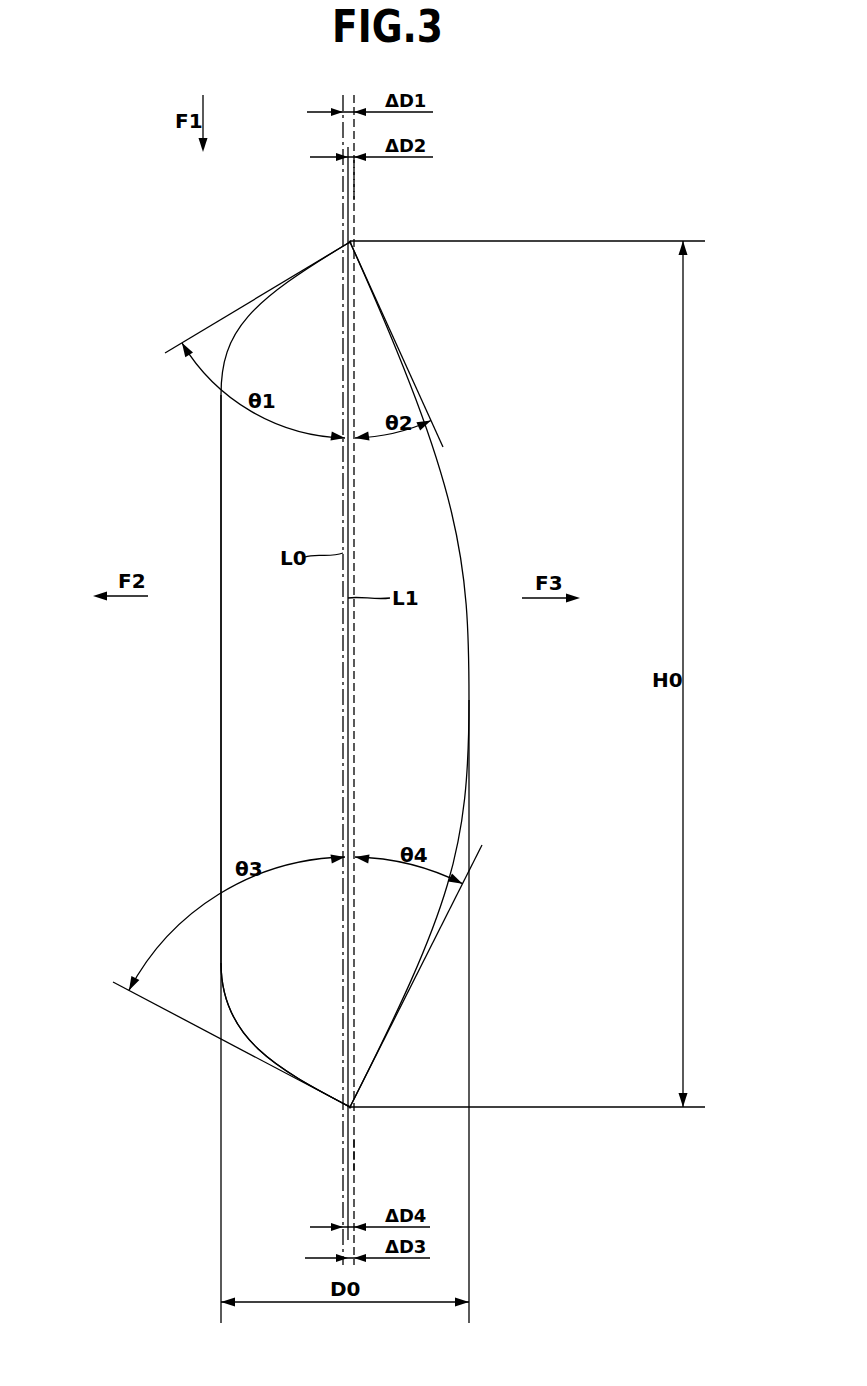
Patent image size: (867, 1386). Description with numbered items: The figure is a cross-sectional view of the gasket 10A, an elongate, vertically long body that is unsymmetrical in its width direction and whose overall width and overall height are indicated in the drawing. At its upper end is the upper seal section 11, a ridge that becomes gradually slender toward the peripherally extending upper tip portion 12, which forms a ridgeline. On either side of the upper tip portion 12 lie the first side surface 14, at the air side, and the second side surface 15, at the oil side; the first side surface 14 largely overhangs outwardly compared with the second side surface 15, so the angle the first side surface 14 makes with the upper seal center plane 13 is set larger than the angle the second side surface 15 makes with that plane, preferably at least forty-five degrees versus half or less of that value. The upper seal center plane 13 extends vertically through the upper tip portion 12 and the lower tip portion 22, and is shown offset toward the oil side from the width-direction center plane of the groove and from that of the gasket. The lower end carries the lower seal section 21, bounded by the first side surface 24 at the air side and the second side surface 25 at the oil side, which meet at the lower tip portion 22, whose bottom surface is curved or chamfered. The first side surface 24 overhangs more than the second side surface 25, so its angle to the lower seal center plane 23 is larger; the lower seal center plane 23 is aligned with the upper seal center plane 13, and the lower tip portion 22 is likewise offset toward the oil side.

The rolling element (asymmetric roller) 10A is at (140, 772).
The upper seal section 11 is at (372, 301).
The upper tip portion 12 is at (354, 240).
The upper seal center plane 13 is at (356, 183).
The first side surface 14 is at (247, 320).
The second side surface 15 is at (400, 337).
The lower seal section 21 is at (296, 1053).
The lower tip portion 22 is at (355, 1110).
The lower seal center plane 23 is at (355, 1155).
The first side surface 24 is at (240, 1027).
The second side surface 25 is at (405, 1000).